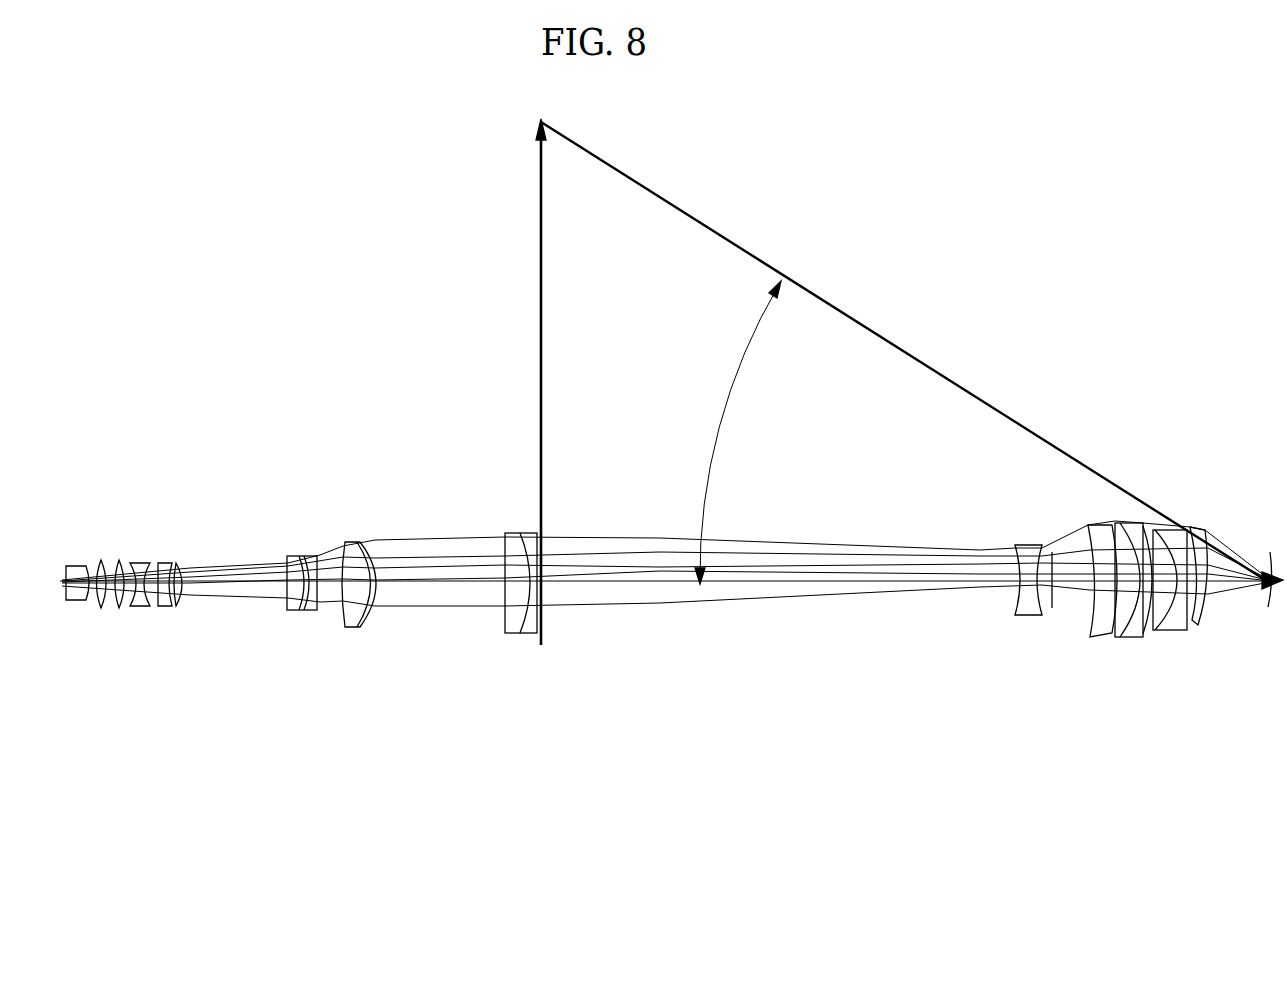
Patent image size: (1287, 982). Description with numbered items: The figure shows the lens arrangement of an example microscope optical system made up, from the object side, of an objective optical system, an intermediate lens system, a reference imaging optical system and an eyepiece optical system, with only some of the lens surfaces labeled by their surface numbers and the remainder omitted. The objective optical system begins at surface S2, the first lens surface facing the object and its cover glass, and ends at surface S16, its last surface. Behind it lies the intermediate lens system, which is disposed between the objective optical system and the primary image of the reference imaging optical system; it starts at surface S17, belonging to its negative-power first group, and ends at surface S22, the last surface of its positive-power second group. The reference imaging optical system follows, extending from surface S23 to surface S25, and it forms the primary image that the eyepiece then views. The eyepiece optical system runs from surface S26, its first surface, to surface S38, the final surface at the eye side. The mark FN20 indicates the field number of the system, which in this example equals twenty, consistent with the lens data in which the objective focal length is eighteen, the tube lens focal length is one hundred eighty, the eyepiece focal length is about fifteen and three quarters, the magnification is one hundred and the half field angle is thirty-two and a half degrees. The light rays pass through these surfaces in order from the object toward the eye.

The surface number 2 S2 is at (64, 584).
The surface number 16 S16 is at (182, 562).
The surface number 17 S17 is at (288, 562).
The surface number 22 S22 is at (373, 548).
The surface number 23 S23 is at (505, 547).
The surface number 25 S25 is at (542, 617).
The surface number 26 S26 is at (1018, 548).
The field number FN20 is at (1043, 632).
The surface number 38 S38 is at (1207, 612).